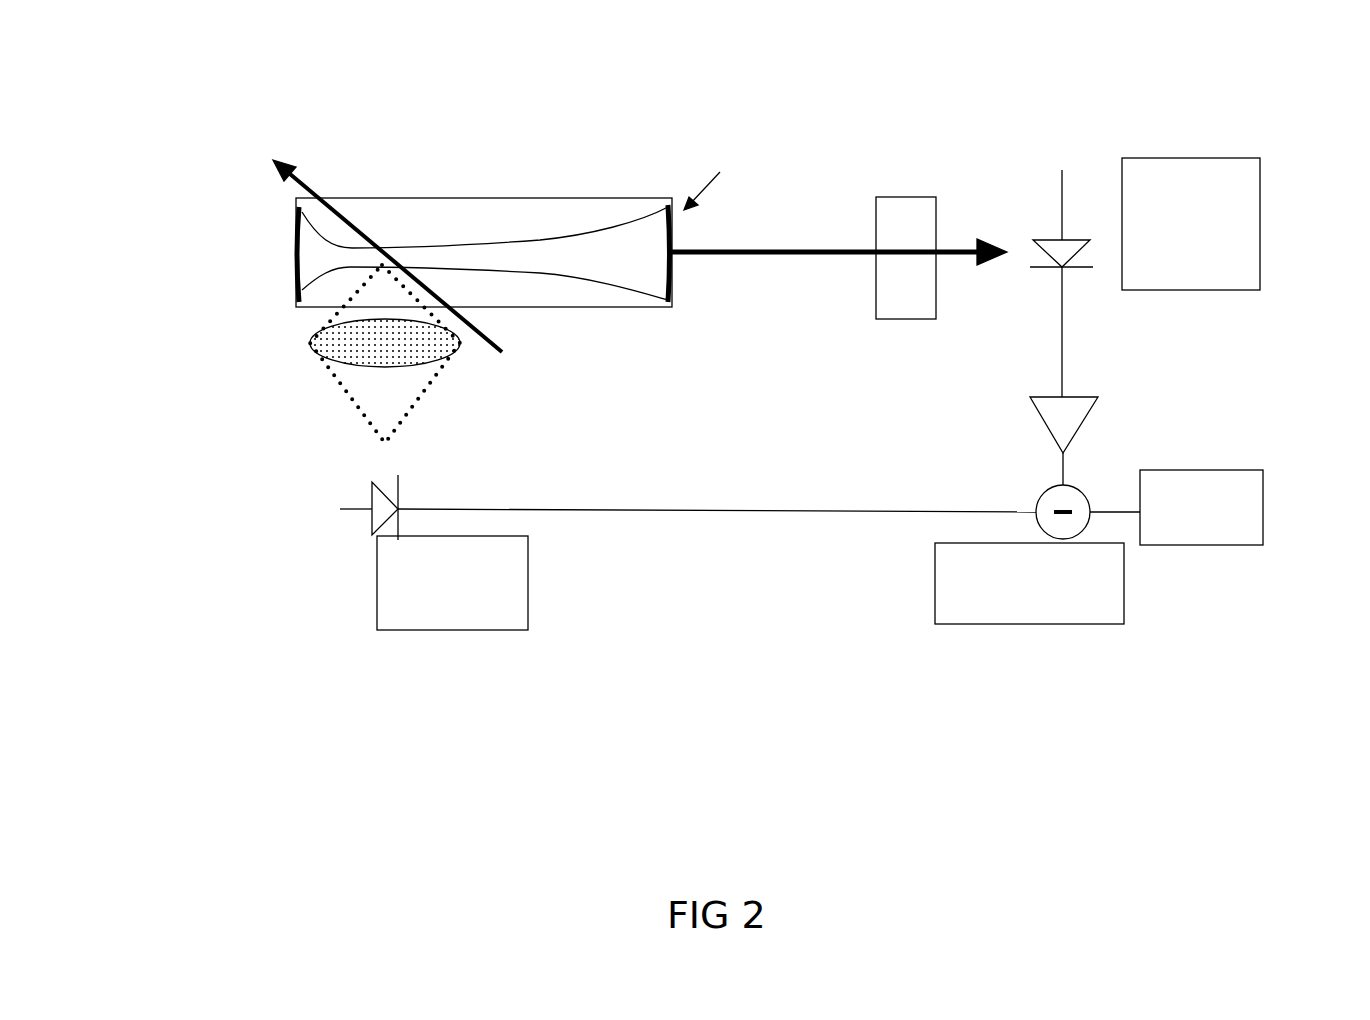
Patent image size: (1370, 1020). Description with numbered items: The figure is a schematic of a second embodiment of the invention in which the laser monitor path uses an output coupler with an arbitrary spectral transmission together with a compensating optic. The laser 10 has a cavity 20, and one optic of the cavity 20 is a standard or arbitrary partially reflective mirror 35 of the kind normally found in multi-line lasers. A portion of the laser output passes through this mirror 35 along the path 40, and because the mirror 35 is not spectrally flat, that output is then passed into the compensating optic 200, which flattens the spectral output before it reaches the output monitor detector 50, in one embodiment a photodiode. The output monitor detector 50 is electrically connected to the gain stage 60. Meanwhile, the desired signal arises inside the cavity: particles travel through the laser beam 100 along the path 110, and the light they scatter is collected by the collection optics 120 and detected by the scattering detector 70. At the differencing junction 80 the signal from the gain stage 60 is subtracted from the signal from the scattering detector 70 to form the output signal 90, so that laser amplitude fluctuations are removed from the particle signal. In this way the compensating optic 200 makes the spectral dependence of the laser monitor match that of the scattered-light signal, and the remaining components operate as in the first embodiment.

The laser 10 is at (488, 133).
The cavity 20 is at (590, 215).
The partially reflective mirror 35 is at (673, 275).
The path 40 is at (836, 257).
The output monitor detector 50 is at (1182, 302).
The gain stage 60 is at (1082, 443).
The scattering detector 70 is at (528, 579).
The differencing junction 80 is at (1017, 624).
The output signal 90 is at (1263, 503).
The laser beam 100 is at (590, 277).
The path 110 is at (488, 343).
The collection optics 120 is at (202, 375).
The compensating optic 200 is at (897, 197).